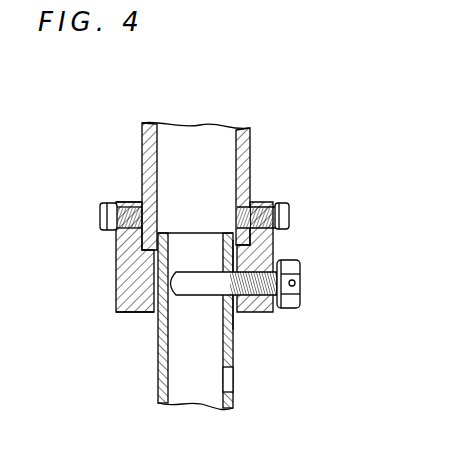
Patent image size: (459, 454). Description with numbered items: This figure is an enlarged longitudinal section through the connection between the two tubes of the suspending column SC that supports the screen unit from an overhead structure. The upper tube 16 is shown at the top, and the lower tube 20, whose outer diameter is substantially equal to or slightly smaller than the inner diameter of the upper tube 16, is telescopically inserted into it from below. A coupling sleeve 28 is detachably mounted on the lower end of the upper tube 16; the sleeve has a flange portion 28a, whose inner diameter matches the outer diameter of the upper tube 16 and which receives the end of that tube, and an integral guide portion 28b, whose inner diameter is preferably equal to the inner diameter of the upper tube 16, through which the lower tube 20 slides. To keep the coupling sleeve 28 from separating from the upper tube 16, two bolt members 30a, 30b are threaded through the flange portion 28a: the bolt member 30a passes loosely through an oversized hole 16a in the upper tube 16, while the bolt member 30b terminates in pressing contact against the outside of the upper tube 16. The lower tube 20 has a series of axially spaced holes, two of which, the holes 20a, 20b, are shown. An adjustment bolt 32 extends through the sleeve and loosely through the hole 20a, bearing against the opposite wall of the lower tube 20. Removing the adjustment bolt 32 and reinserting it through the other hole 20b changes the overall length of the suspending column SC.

The upper tube 16 is at (246, 138).
The hole 16a is at (251, 172).
The suspending column SC is at (200, 208).
The bolt member 30a is at (296, 209).
The bolt member 30b is at (104, 212).
The coupling sleeve 28 is at (144, 257).
The flange portion 28a is at (118, 240).
The guide portion 28b is at (118, 298).
The adjustment bolt 32 is at (296, 283).
The lower tube 20 is at (201, 321).
The hole 20a is at (236, 322).
The hole 20b is at (236, 380).